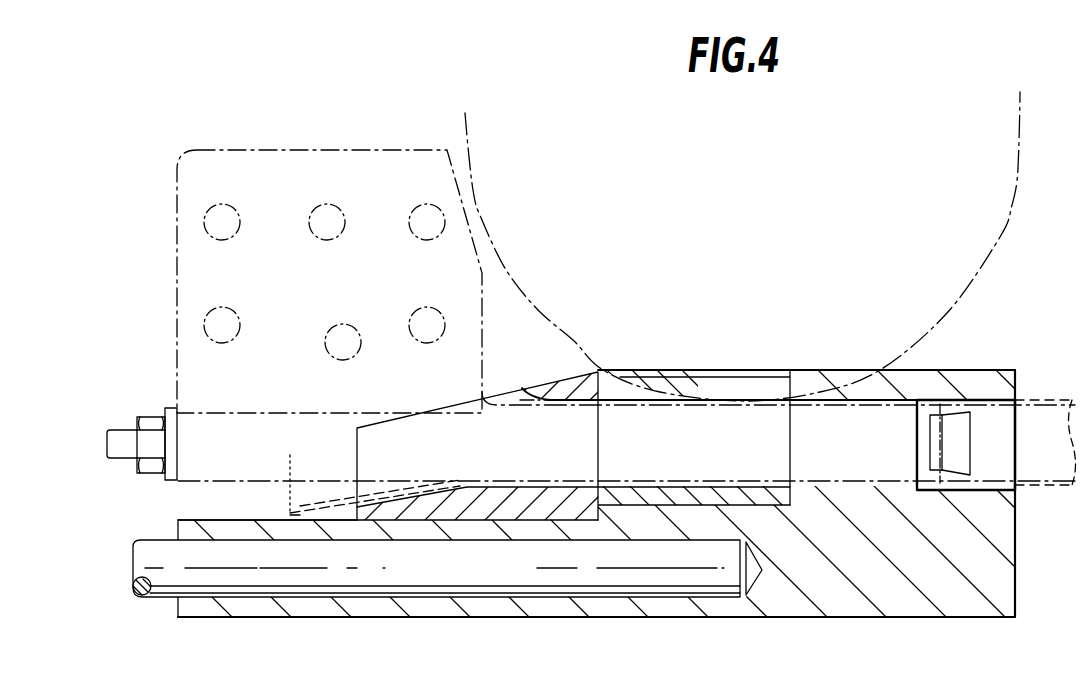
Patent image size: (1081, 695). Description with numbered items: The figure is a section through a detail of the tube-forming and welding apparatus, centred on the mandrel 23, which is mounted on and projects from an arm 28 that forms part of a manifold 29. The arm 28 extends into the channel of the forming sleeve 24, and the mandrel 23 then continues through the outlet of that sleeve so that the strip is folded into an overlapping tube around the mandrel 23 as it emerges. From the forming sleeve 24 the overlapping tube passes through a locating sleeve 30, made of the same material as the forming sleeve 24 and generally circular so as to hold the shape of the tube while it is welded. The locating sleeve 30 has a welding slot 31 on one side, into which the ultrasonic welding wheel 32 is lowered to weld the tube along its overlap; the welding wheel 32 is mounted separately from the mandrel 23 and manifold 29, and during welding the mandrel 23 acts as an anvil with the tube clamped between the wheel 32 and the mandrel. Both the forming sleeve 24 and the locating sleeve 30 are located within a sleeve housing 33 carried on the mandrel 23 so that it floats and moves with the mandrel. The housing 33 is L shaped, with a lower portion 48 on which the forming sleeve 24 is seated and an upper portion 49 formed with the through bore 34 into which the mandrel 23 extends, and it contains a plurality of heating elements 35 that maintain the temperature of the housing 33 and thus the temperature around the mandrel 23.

The mandrel 23 is at (882, 484).
The forming sleeve 24 is at (490, 514).
The arm 28 is at (203, 480).
The manifold 29 is at (293, 162).
The locating sleeve 30 is at (773, 500).
The welding slot 31 is at (731, 392).
The ultrasonic welding wheel 32 is at (1020, 167).
The sleeve housing 33 is at (1017, 575).
The through bore 34 is at (997, 447).
The heating elements 35 is at (638, 578).
The lower portion 48 is at (262, 500).
The upper portion 49 is at (980, 383).